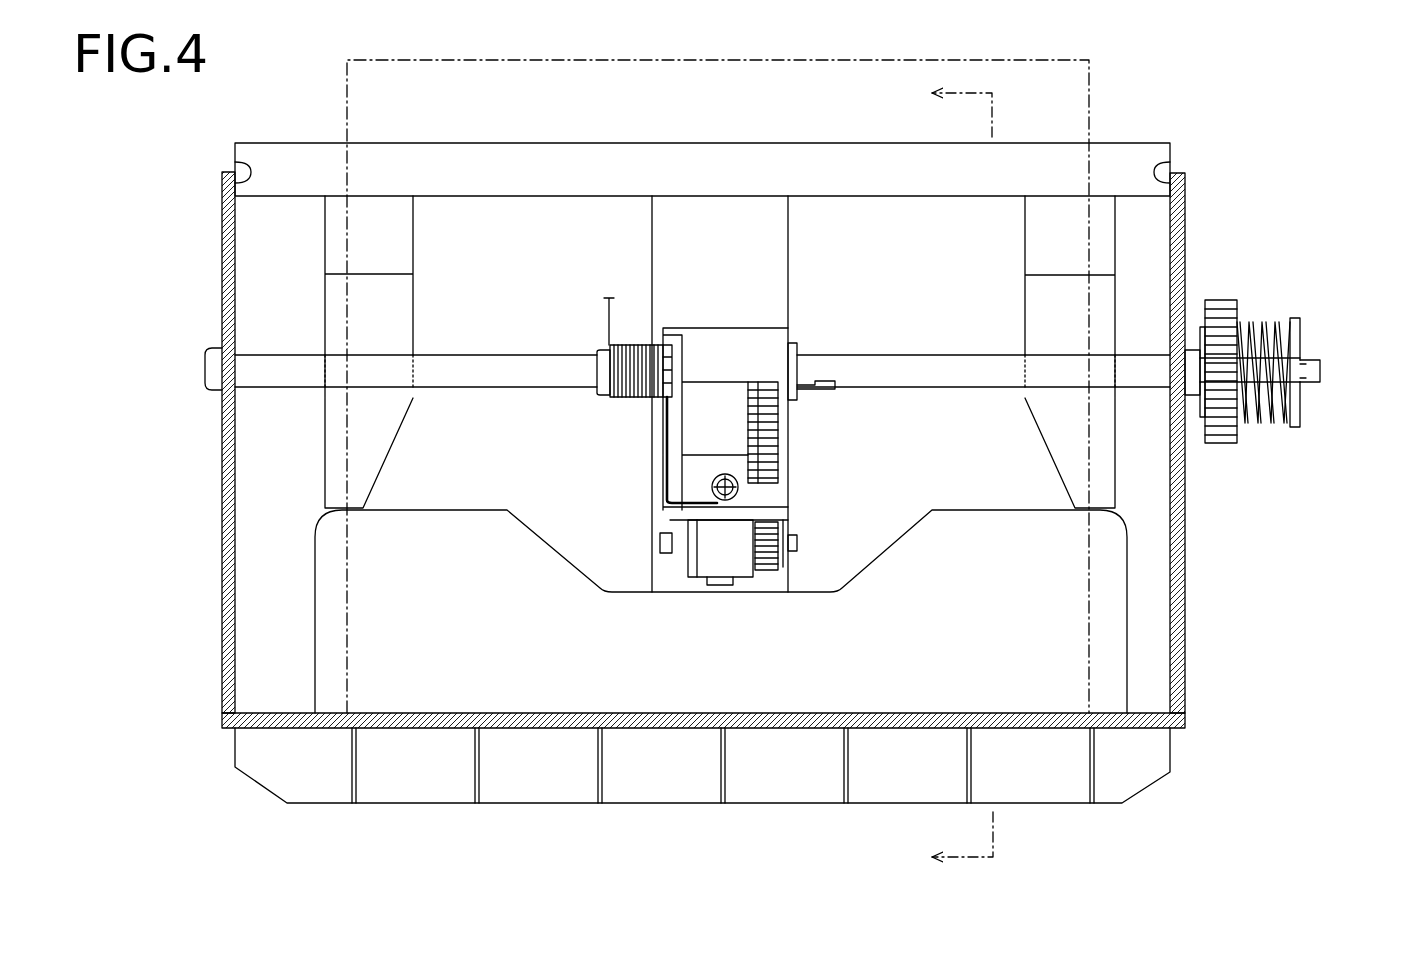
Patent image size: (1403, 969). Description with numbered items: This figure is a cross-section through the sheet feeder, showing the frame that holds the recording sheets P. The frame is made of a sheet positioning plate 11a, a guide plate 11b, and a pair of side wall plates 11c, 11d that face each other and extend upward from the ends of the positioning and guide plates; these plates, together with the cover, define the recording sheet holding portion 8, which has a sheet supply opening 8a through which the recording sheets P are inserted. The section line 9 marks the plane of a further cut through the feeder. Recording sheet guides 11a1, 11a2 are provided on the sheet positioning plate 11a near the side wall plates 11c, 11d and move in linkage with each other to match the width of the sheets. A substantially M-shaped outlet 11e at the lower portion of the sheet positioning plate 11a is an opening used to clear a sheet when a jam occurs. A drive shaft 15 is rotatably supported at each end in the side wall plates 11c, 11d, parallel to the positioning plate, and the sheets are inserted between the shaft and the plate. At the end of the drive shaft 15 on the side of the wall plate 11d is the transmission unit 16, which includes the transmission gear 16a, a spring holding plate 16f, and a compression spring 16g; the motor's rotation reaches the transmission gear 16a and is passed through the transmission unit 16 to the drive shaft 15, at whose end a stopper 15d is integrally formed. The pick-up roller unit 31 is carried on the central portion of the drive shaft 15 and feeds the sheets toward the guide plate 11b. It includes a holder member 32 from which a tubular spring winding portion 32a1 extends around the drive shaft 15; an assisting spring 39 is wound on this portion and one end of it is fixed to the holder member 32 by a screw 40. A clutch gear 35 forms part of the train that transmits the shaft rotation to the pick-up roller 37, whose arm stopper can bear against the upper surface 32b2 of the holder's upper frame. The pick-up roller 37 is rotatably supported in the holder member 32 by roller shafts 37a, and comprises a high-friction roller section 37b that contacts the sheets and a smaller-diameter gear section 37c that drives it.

The recording sheets P is at (1080, 96).
The recording sheet holding portion 8 is at (524, 185).
The sheet supply opening 8a is at (237, 167).
The section line 9 is at (948, 477).
The sheet positioning plate 11a is at (706, 166).
The recording sheet guide 11a1 is at (405, 249).
The recording sheet guide 11a2 is at (1038, 243).
The guide plate 11b is at (440, 722).
The side wall plate 11c is at (230, 204).
The side wall plate 11d is at (1180, 184).
The outlet 11e is at (999, 512).
The drive shaft 15 is at (926, 362).
The stopper 15d is at (1301, 396).
The transmission unit 16 is at (1279, 324).
The transmission gear 16a is at (1221, 448).
The compression spring 16g is at (1271, 330).
The spring holding plate 16f is at (1305, 338).
The pick-up roller unit 31 is at (710, 453).
The holder member 32 is at (717, 419).
The spring winding portion 32a1 is at (601, 396).
The upper surface of upper frame 32b2 is at (770, 464).
The clutch gear 35 is at (780, 412).
The pick-up roller 37 is at (725, 615).
The roller shaft 37a is at (660, 543).
The roller section 37b is at (693, 574).
The gear section 37c is at (762, 572).
The assisting spring 39 is at (606, 313).
The screw 40 is at (717, 479).